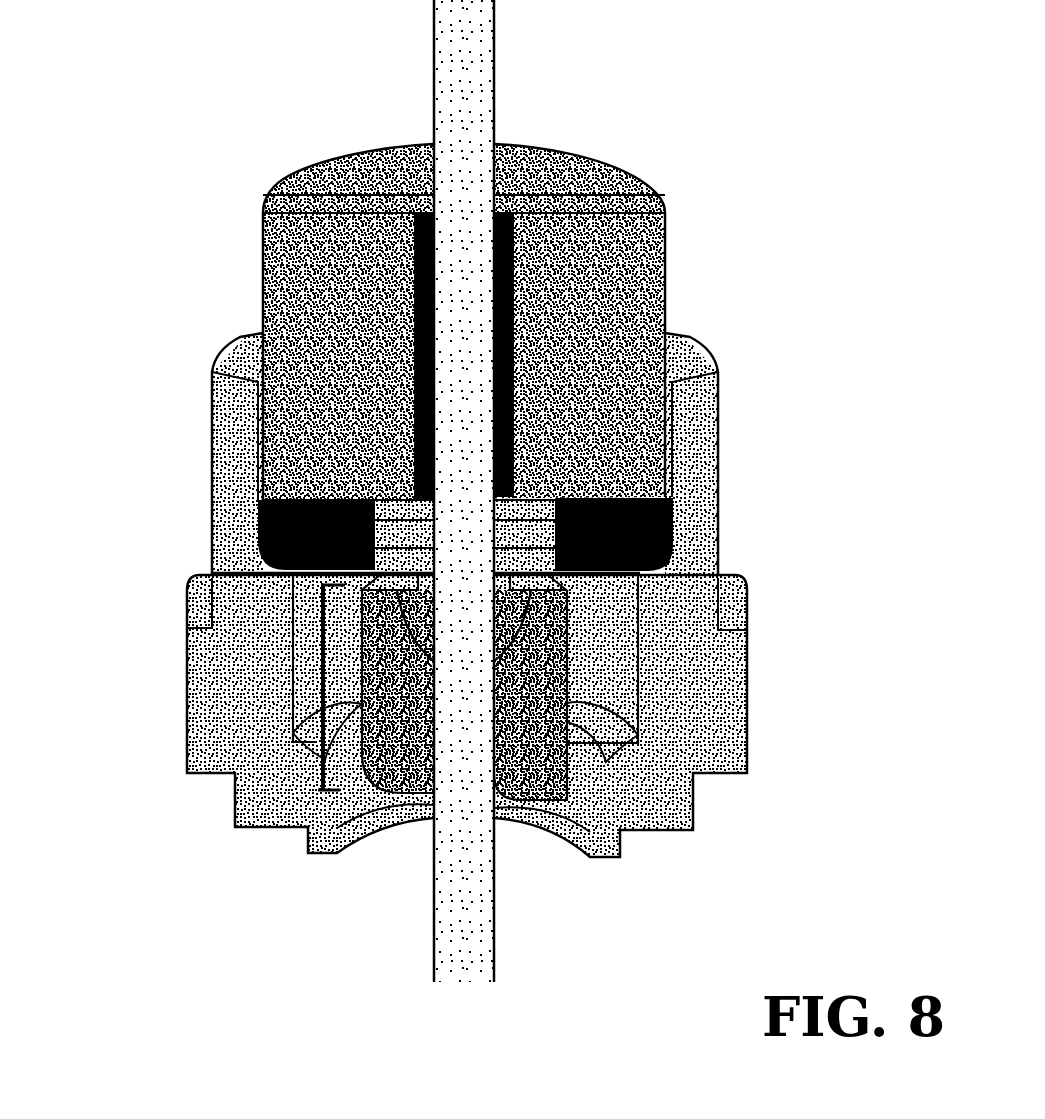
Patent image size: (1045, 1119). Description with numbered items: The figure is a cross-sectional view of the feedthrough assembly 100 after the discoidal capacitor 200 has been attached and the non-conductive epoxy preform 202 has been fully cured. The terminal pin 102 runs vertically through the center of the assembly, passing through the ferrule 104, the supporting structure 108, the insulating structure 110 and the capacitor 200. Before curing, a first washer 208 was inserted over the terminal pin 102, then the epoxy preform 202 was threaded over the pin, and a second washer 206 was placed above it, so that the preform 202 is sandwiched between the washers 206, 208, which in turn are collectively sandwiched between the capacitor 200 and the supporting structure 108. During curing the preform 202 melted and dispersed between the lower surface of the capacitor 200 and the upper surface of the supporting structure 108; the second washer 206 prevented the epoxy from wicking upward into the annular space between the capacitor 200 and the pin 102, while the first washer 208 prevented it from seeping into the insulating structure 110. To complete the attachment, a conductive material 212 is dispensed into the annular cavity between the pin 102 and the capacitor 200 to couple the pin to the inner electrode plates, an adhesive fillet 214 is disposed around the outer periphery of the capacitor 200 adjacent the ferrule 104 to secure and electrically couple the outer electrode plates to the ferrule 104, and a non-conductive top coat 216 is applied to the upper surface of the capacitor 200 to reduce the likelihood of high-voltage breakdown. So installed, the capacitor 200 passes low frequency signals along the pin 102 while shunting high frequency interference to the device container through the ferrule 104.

The feedthrough assembly 100 is at (782, 432).
The terminal pin 102 is at (483, 60).
The ferrule 104 is at (738, 710).
The supporting structure 108 is at (650, 598).
The insulating structure 110 is at (320, 675).
The discoidal capacitor 200 is at (653, 297).
The non-conductive epoxy preform 202 is at (662, 540).
The second washer 206 is at (538, 517).
The first washer 208 is at (212, 577).
The conductive material 212 is at (513, 303).
The adhesive fillet 214 is at (683, 352).
The non-conductive top coat 216 is at (533, 147).